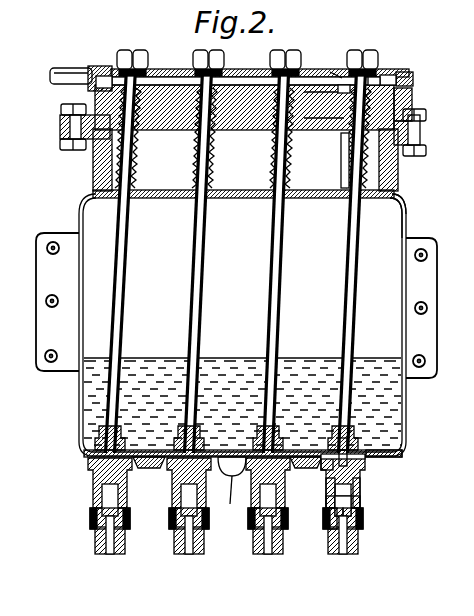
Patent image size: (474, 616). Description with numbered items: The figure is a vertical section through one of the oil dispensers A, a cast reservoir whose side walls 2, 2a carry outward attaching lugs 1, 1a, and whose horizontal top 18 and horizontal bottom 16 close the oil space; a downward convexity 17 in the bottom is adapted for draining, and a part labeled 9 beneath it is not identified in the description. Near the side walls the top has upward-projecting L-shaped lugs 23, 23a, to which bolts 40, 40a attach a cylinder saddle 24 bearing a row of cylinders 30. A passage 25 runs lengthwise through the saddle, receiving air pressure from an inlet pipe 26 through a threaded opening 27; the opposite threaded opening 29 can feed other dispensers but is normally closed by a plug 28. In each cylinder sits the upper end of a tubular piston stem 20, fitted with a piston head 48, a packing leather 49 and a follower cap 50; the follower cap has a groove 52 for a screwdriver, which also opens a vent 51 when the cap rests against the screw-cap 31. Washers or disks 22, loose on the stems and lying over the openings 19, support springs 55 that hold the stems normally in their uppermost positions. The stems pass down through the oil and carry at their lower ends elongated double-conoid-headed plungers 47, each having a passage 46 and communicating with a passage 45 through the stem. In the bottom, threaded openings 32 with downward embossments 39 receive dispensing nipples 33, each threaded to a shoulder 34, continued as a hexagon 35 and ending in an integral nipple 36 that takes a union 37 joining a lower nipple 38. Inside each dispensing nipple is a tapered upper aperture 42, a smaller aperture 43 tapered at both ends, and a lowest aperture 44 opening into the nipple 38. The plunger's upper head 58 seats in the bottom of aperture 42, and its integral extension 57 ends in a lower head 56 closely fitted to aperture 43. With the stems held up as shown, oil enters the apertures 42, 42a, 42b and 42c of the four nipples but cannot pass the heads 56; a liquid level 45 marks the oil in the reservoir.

The attaching lug 1 is at (28, 297).
The attaching lug 1a is at (430, 289).
The side wall 2 is at (72, 198).
The side wall 2a is at (397, 204).
The drain loop 9 is at (237, 285).
The horizontal bottom 16 is at (80, 451).
The downward convexity 17 is at (232, 447).
The horizontal portion of the top 18 is at (396, 192).
The openings 19 is at (336, 189).
The tubular piston stem 20 is at (128, 223).
The washers or disks 22 is at (356, 186).
The L shaped lug 23 is at (86, 160).
The L shaped lug 23a is at (390, 163).
The cylinder saddle 24 is at (392, 98).
The passage 25 is at (165, 53).
The inlet pipe 26 is at (42, 68).
The threaded opening 27 is at (96, 58).
The plug 28 is at (402, 66).
The threaded opening 29 is at (382, 68).
The cylinder 30 is at (346, 126).
The screw-cap 31 is at (247, 61).
The threaded opening 32 is at (363, 448).
The dispensing nipple 33 is at (388, 491).
The shoulder 34 is at (357, 483).
The hexagon 35 is at (374, 505).
The integral nipple 36 is at (358, 518).
The union 37 is at (382, 519).
The nipple 38 is at (361, 535).
The downward projecting embossment 39 is at (95, 506).
The bolt 40 is at (56, 96).
The bolt 40a is at (418, 104).
The cylindrical aperture 42 is at (331, 429).
The cylindrical aperture 42a is at (257, 480).
The cylindrical aperture 42b is at (182, 480).
The cylindrical aperture 42c is at (102, 428).
The cylindrical aperture 43 is at (317, 493).
The cylindrical aperture 44 is at (317, 515).
The passage 45 is at (350, 353).
The passage 46 is at (316, 467).
The double-conoid-headed plunger 47 is at (354, 434).
The piston head 48 is at (324, 111).
The packing leather 49 is at (324, 98).
The follower cap 50 is at (332, 78).
The vent 51 is at (332, 64).
The groove 52 is at (364, 68).
The spring 55 is at (340, 146).
The head 56 is at (364, 500).
The integral extension 57 is at (392, 449).
The head 58 is at (326, 440).